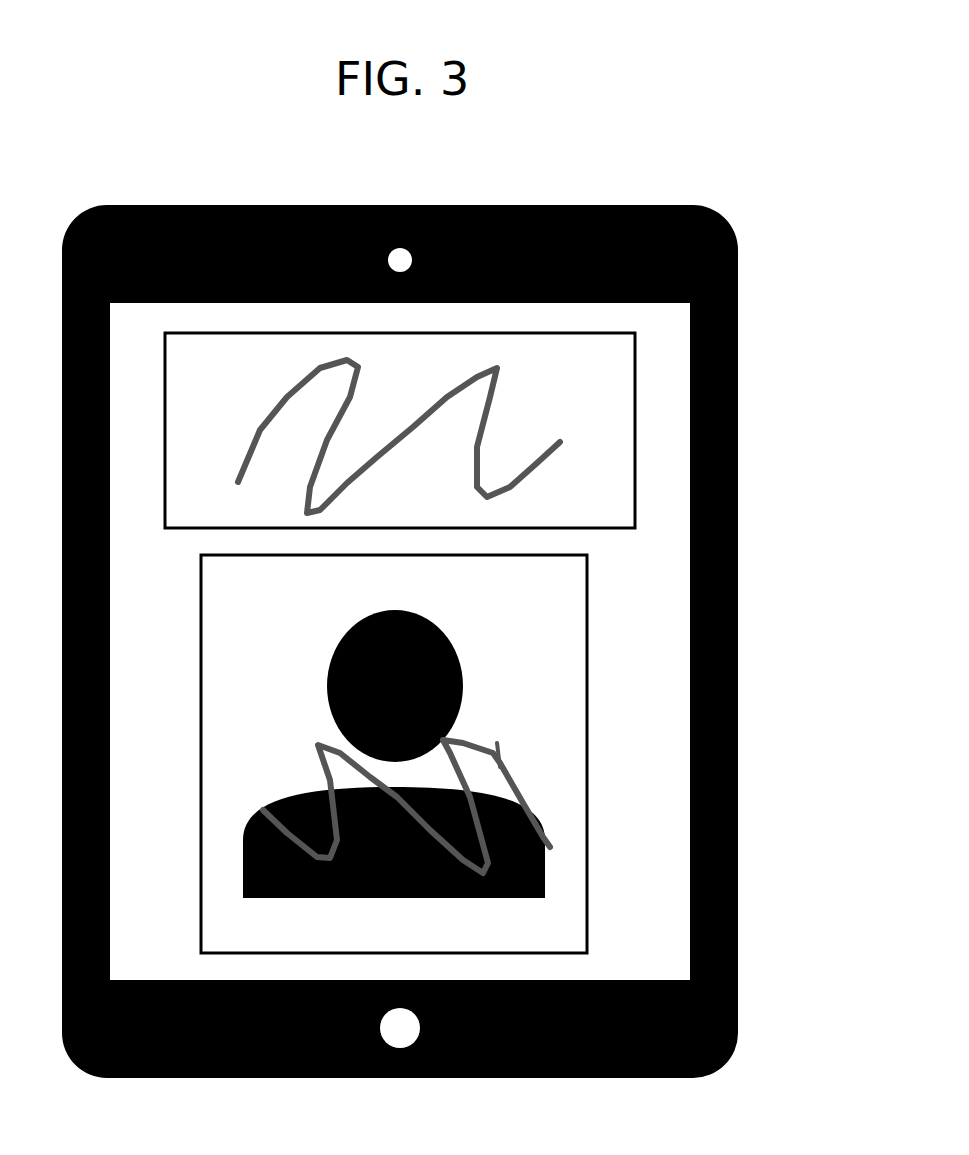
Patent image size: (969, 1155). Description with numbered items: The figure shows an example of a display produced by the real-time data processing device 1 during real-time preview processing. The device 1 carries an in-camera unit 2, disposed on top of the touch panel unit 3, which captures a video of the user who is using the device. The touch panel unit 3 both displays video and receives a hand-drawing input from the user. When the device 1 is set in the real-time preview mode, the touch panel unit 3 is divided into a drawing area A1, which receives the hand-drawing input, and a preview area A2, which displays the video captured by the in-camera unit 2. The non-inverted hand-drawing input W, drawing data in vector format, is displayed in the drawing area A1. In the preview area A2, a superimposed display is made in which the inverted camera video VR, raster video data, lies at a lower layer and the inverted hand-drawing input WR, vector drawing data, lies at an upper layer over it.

The real-time data processing device 1 is at (610, 202).
The in-camera unit 2 is at (410, 243).
The touch panel unit 3 is at (673, 323).
The drawing area A1 is at (630, 413).
The preview area A2 is at (583, 630).
The non-inverted hand-drawing input W is at (338, 425).
The inverted camera video VR is at (347, 630).
The inverted hand-drawing input WR is at (453, 763).